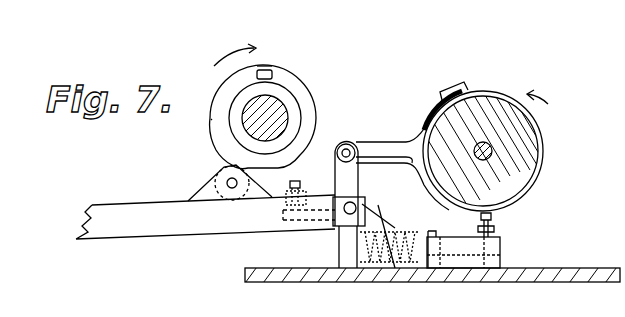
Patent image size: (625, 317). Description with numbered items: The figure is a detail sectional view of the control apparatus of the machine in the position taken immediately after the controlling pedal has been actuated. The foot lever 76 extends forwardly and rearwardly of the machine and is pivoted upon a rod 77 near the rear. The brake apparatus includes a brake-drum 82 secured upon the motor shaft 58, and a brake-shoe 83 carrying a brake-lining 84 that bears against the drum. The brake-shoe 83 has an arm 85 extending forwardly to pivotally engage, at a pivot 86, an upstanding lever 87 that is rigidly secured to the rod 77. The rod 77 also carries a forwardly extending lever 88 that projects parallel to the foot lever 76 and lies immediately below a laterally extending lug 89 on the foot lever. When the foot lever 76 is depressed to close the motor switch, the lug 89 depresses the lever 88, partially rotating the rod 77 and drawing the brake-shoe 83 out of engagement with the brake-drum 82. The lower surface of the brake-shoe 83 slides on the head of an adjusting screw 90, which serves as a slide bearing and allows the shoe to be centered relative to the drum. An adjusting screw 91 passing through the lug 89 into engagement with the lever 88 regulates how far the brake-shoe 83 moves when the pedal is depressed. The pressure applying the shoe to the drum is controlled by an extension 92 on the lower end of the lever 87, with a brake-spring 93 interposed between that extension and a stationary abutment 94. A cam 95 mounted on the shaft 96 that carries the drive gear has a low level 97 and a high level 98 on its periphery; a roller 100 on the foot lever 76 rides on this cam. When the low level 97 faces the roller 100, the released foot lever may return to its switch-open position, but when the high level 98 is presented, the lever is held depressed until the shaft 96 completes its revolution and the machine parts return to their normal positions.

The motor shaft 58 is at (492, 142).
The foot lever 76 is at (119, 212).
The rod 77 is at (356, 207).
The brake-drum 82 is at (490, 108).
The brake-shoe 83 is at (425, 118).
The brake-lining 84 is at (446, 97).
The arm 85 is at (373, 141).
The pivot 86 is at (343, 146).
The upstanding lever 87 is at (360, 180).
The forwardly extending lever 88 is at (297, 231).
The lug 89 is at (308, 193).
The adjusting screw 90 is at (493, 221).
The adjusting screw 91 is at (292, 184).
The extension 92 is at (339, 251).
The brake-spring 93 is at (360, 270).
The abutment 94 is at (415, 275).
The cam 95 is at (282, 73).
The shaft 96 is at (271, 102).
The low level 97 is at (302, 110).
The high level 98 is at (212, 120).
The roller 100 is at (222, 163).